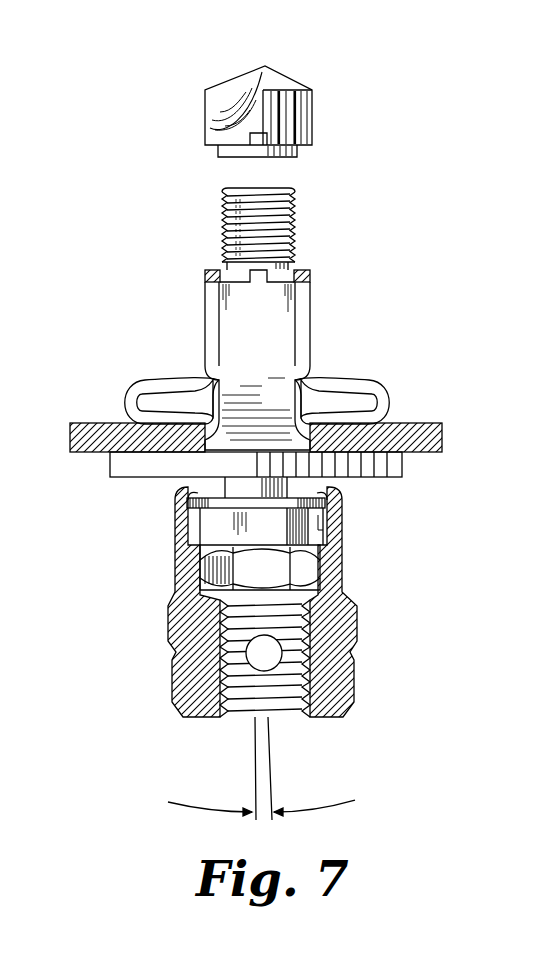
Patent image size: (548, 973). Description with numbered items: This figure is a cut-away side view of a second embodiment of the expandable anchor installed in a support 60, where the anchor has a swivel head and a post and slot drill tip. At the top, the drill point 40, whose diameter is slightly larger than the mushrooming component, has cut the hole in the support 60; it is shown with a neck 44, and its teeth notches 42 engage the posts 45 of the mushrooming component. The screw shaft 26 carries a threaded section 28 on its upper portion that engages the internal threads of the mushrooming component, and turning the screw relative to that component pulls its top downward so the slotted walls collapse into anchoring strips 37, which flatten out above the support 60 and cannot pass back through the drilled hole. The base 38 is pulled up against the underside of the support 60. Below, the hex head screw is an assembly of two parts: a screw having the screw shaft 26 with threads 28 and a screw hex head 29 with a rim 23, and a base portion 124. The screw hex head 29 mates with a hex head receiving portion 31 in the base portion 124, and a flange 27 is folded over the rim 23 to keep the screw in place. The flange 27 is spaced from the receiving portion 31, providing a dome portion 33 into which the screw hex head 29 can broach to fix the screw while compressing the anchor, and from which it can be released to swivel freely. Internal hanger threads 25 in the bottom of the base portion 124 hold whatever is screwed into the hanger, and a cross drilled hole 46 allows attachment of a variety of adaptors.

The drill point 40 is at (293, 82).
The neck 44 is at (218, 149).
The teeth notches 42 is at (260, 156).
The screw shaft 26 is at (295, 213).
The threaded section 28 is at (295, 213).
The posts 45 is at (217, 270).
The anchoring strips 37 is at (140, 388).
The support 60 is at (428, 453).
The base 38 is at (147, 478).
The flange 27 is at (227, 482).
The base portion 124 is at (260, 602).
The cross drilled hole 46 is at (305, 687).
The rim 23 is at (232, 513).
The dome portion 33 is at (342, 524).
The hex head receiving portion 31 is at (258, 577).
The screw hex head 29 is at (238, 566).
The internal hanger threads 25 is at (285, 703).